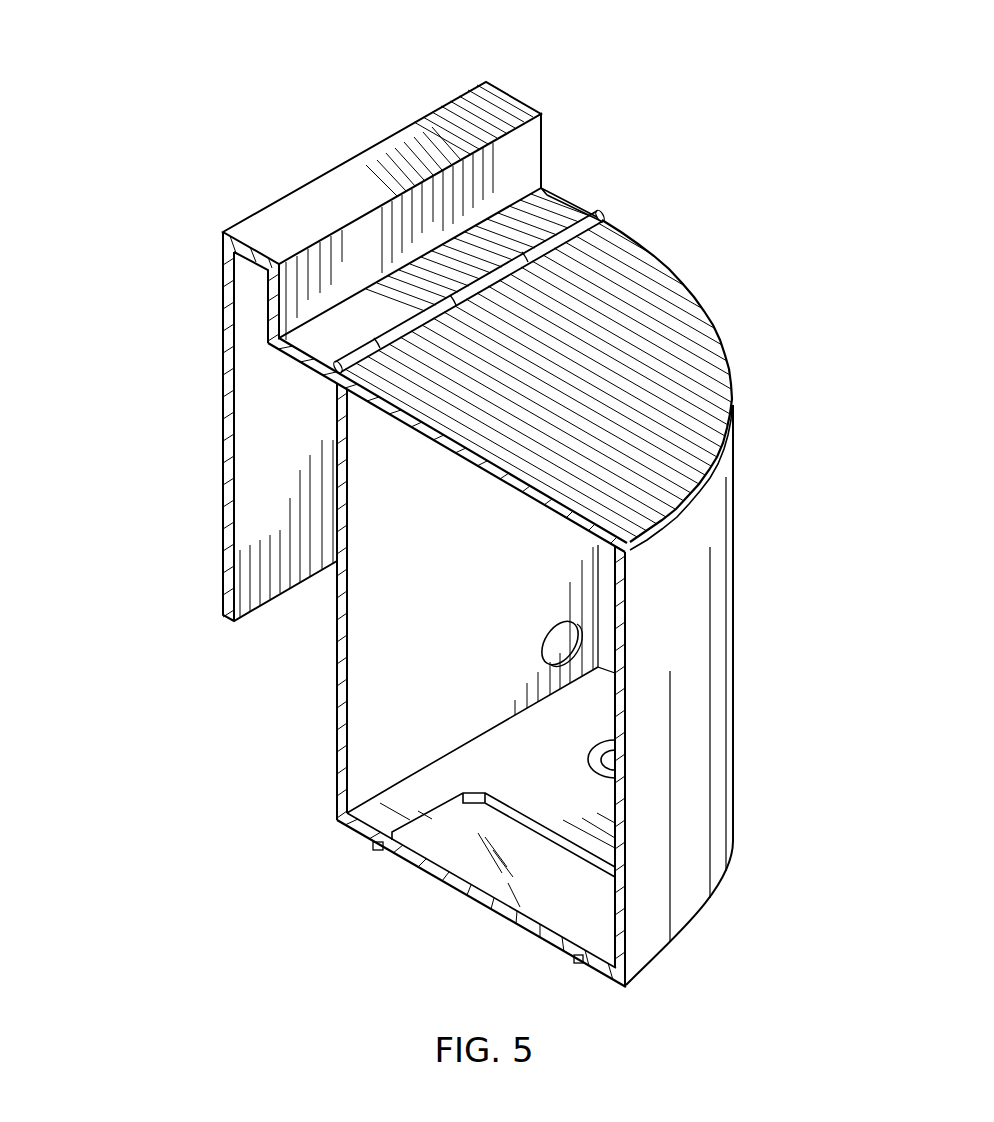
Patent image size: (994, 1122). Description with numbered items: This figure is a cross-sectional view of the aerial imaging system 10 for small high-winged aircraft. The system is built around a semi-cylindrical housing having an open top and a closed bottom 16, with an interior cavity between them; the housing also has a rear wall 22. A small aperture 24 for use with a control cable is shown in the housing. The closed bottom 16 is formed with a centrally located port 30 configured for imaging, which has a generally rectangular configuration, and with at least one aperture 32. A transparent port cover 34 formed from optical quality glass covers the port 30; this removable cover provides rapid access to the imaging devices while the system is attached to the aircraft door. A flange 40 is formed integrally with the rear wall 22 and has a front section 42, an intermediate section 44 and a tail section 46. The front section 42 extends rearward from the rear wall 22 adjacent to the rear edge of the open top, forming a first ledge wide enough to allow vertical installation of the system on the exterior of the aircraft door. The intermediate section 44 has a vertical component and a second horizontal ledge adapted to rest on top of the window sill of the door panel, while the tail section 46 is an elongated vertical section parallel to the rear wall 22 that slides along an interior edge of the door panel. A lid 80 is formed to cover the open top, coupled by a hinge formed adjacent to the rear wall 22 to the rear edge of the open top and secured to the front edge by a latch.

The aerial imaging system 10 is at (119, 270).
The closed bottom 16 is at (410, 790).
The rear wall 22 is at (363, 645).
The small aperture 24 is at (560, 634).
The port 30 is at (430, 828).
The aperture 32 is at (597, 767).
The transparent port cover 34 is at (492, 916).
The flange 40 is at (570, 99).
The front section 42 is at (565, 197).
The intermediate section 44 is at (460, 193).
The tail section 46 is at (265, 443).
The lid 80 is at (670, 312).